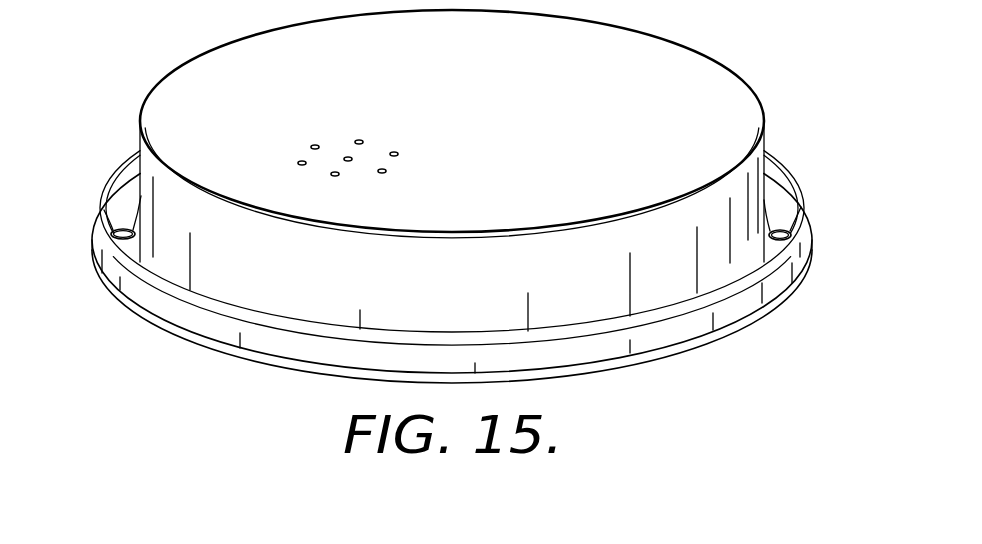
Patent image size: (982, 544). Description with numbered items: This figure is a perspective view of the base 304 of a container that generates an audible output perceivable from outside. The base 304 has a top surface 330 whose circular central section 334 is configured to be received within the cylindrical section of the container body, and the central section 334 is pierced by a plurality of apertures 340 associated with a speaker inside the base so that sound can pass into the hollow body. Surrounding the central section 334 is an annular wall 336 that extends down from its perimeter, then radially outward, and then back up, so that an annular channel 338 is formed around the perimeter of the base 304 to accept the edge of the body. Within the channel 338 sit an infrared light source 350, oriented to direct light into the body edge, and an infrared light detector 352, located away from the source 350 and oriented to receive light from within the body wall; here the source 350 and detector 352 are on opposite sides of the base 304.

The base 304 is at (772, 303).
The top surface 330 is at (678, 52).
The circular central section 334 is at (614, 107).
The annular wall 336 is at (766, 151).
The annular channel 338 is at (128, 208).
The apertures 340 is at (360, 139).
The infrared light source 350 is at (111, 228).
The infrared light detector 352 is at (787, 226).